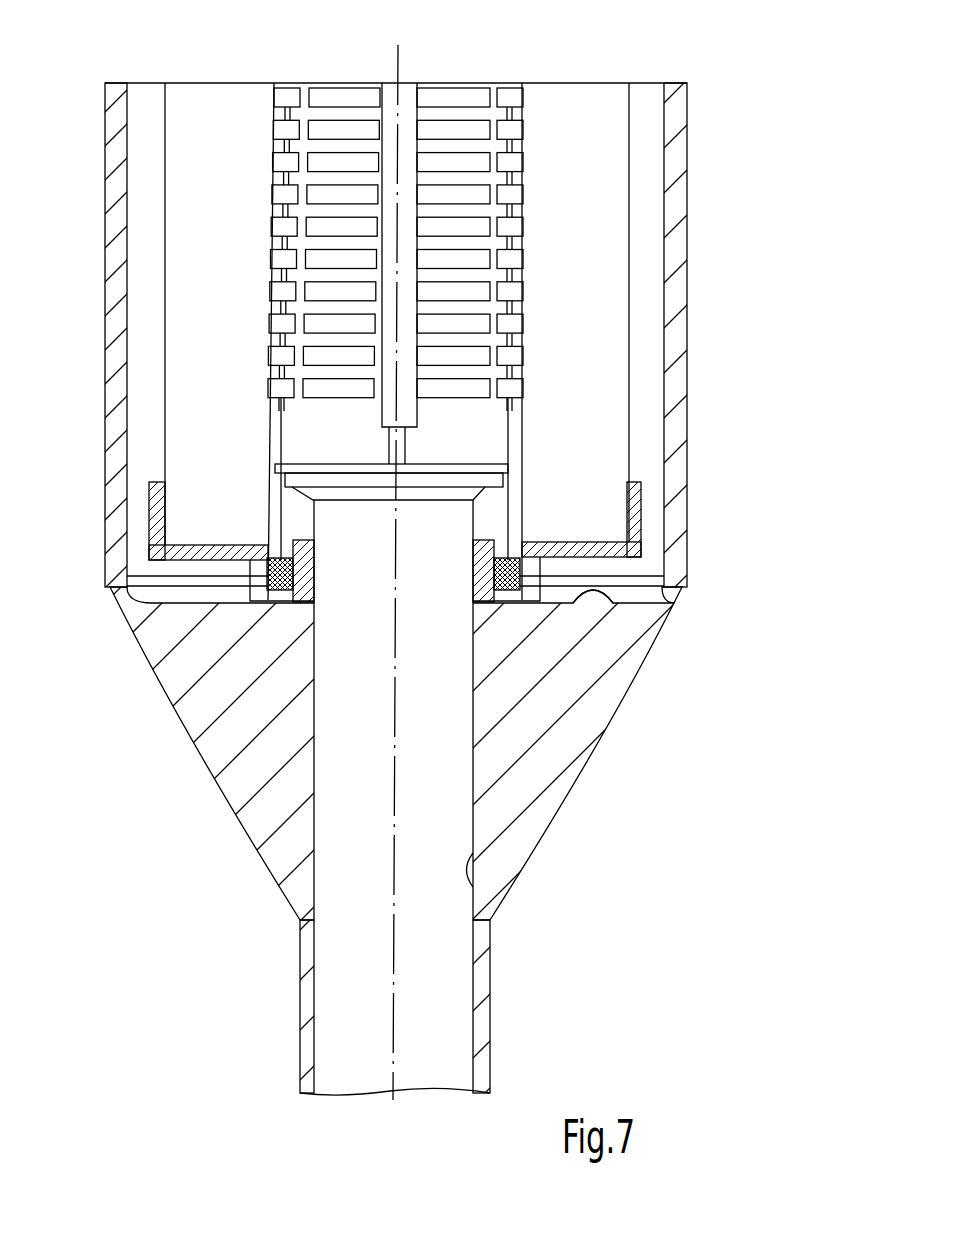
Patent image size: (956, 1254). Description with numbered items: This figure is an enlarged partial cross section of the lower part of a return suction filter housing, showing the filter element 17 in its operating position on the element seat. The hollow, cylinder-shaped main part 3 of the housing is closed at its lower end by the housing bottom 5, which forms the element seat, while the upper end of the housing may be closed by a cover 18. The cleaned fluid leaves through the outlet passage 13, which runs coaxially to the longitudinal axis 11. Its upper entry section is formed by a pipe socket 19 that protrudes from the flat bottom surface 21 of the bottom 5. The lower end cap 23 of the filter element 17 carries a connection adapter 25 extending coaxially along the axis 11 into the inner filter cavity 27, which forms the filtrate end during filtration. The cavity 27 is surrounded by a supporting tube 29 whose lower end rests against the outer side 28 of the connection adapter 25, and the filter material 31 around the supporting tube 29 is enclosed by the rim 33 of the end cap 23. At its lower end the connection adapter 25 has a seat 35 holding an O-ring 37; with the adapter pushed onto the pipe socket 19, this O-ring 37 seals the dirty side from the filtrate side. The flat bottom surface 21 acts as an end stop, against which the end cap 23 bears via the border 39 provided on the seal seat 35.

The main part 3 is at (685, 240).
The housing bottom 5 is at (560, 690).
The longitudinal axis 11 is at (397, 57).
The outlet passage 13 is at (492, 905).
The filter element 17 is at (630, 325).
The cover 18 is at (147, 538).
The pipe socket 19 is at (520, 512).
The flat bottom surface 21 is at (612, 598).
The lower end cap 23 is at (655, 577).
The connection adapter 25 is at (276, 492).
The inner filter cavity 27 is at (478, 417).
The outer side 28 is at (272, 508).
The supporting tube 29 is at (277, 415).
The filter material 31 is at (182, 393).
The rim 33 is at (150, 493).
The seat 35 is at (293, 556).
The O-ring 37 is at (297, 578).
The border 39 is at (473, 645).